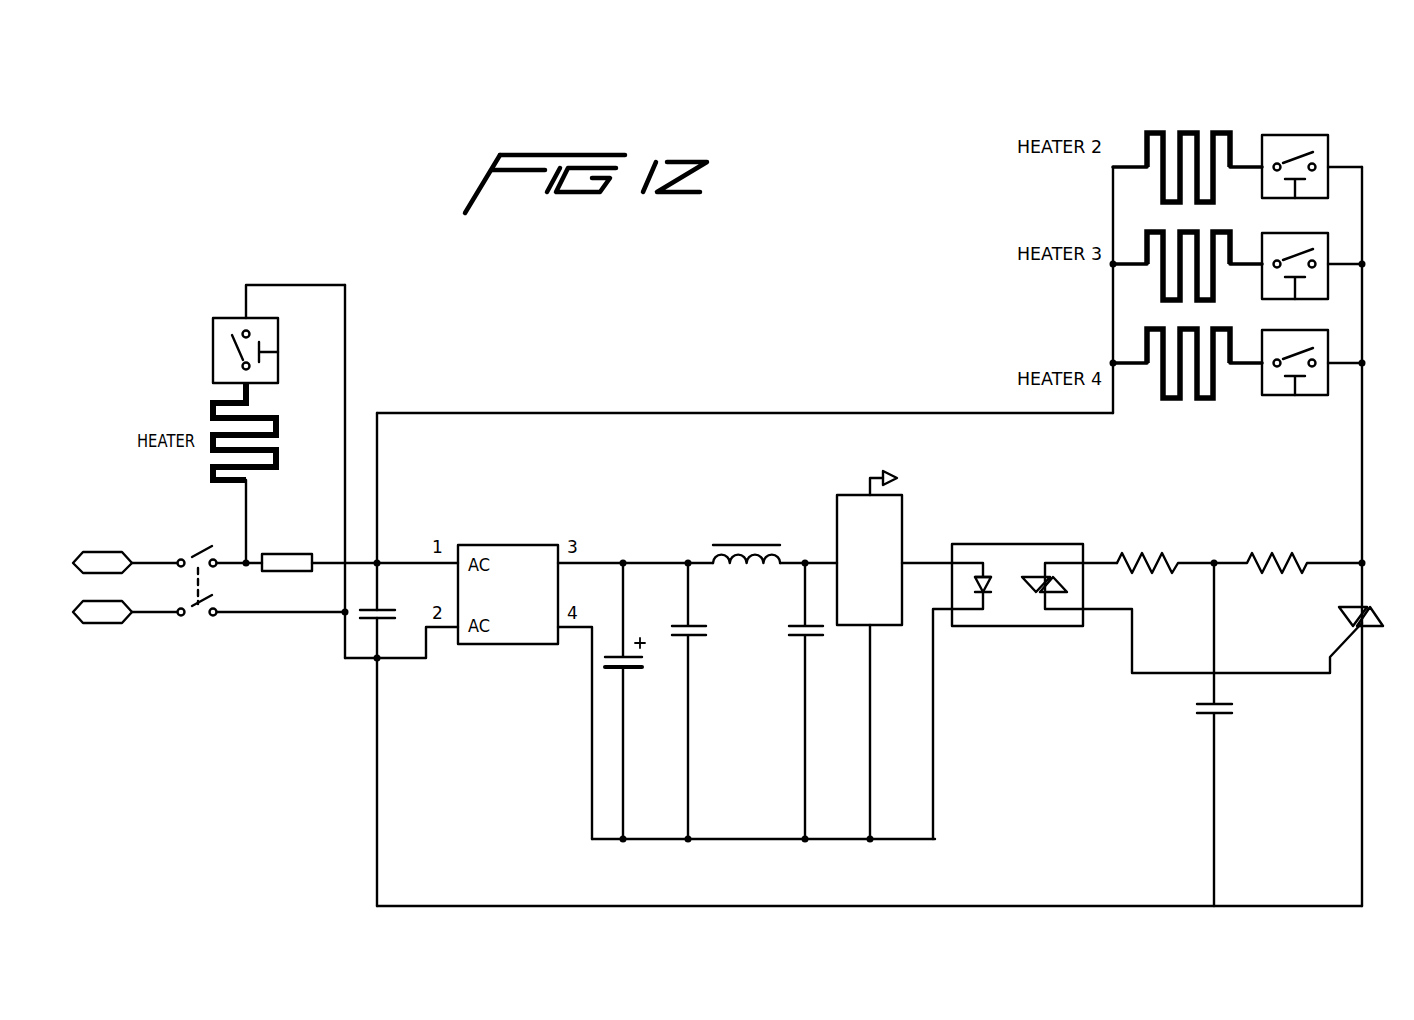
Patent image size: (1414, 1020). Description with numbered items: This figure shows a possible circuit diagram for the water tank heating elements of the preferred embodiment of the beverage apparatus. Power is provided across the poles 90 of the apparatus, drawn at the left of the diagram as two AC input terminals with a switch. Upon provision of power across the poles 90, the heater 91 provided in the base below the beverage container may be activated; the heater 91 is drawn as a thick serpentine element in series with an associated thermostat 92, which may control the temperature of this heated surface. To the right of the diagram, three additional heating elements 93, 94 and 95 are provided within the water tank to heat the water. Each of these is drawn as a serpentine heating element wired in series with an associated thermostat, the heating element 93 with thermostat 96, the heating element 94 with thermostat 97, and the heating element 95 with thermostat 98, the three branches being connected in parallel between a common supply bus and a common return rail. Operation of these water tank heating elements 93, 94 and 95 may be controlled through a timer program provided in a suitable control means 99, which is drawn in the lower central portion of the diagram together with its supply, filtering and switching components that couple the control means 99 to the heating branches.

The poles 90 is at (110, 553).
The heater 91 is at (213, 405).
The thermostat 92 is at (228, 318).
The heating element 93 is at (1188, 133).
The heating element 94 is at (1160, 290).
The heating element 95 is at (1147, 333).
The thermostat 96 is at (1302, 135).
The thermostat 97 is at (1328, 245).
The thermostat 98 is at (1303, 397).
The control means 99 is at (845, 495).